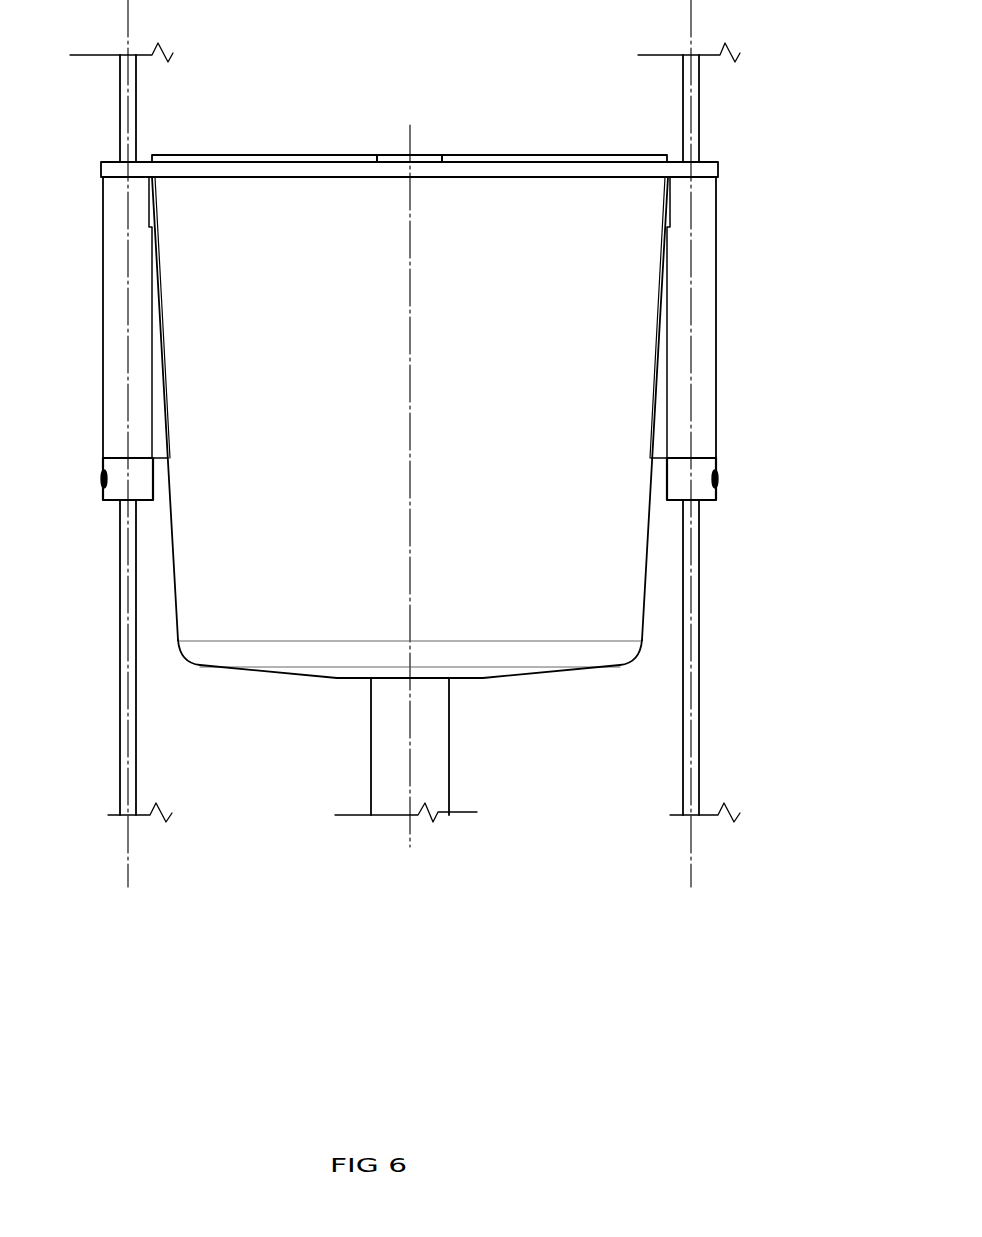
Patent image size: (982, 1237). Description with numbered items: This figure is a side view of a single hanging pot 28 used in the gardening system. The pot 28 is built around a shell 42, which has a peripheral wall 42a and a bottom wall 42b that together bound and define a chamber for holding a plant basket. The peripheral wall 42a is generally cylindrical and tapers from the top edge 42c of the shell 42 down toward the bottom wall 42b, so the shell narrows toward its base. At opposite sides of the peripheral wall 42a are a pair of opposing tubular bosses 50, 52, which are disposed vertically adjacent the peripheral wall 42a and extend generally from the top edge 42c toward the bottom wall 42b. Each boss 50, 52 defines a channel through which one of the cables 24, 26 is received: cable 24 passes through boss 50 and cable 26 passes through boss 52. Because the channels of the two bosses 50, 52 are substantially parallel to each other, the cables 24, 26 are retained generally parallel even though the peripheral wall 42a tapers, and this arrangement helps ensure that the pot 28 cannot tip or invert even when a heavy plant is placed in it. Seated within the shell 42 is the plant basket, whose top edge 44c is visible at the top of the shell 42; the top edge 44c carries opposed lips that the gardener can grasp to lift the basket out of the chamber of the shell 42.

The cable 24 is at (120, 108).
The cable 26 is at (682, 87).
The pot 28 is at (760, 128).
The shell 42 is at (410, 499).
The peripheral wall 42a is at (345, 427).
The bottom wall 42b is at (337, 680).
The top edge 42c is at (287, 173).
The top edge 44c is at (483, 153).
The tubular boss 50 is at (113, 335).
The tubular boss 52 is at (703, 362).